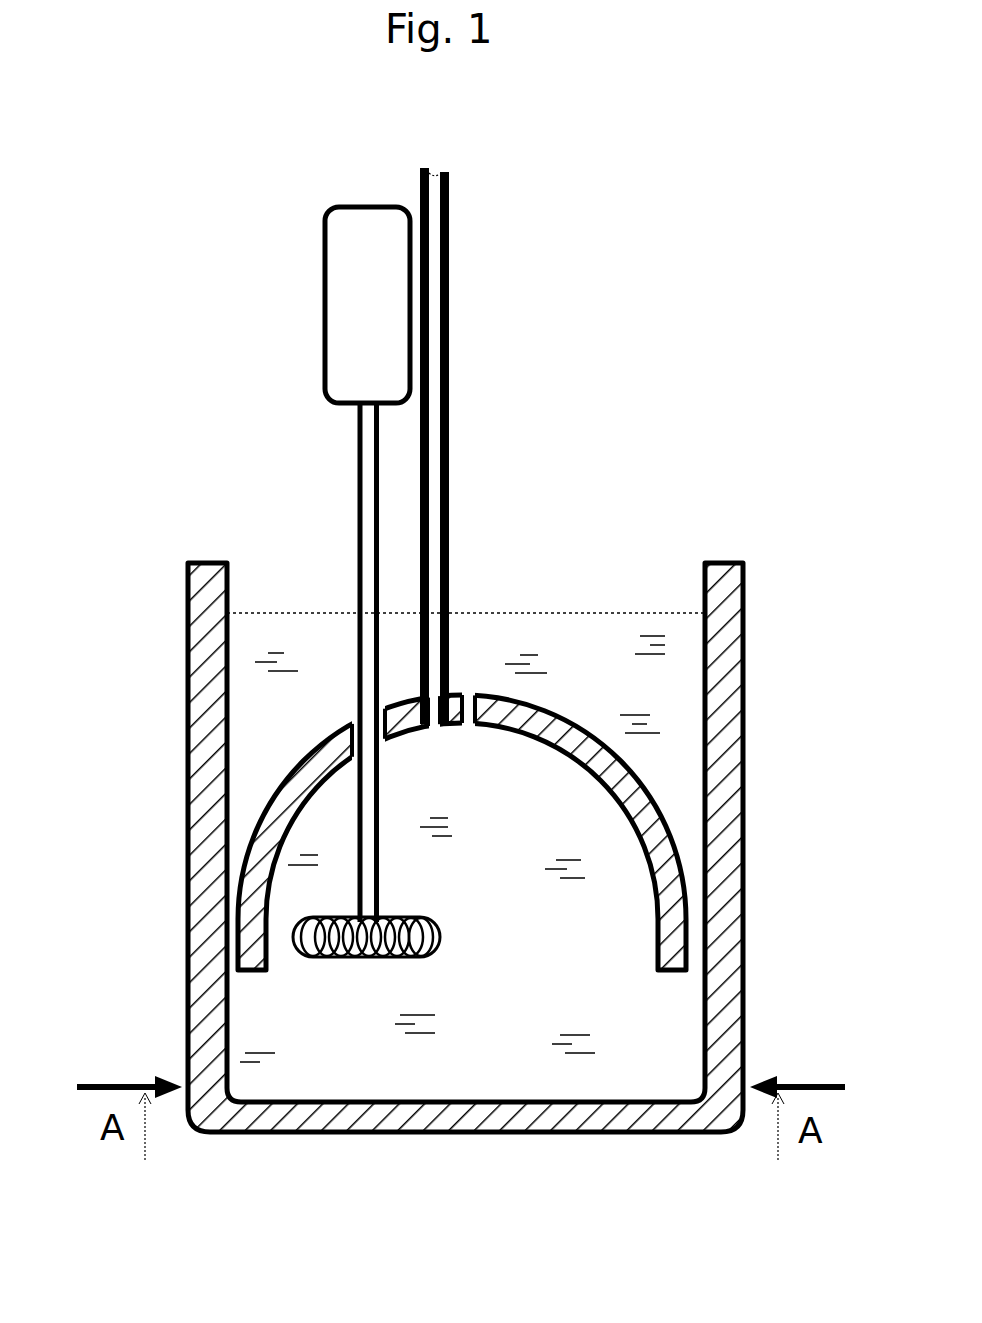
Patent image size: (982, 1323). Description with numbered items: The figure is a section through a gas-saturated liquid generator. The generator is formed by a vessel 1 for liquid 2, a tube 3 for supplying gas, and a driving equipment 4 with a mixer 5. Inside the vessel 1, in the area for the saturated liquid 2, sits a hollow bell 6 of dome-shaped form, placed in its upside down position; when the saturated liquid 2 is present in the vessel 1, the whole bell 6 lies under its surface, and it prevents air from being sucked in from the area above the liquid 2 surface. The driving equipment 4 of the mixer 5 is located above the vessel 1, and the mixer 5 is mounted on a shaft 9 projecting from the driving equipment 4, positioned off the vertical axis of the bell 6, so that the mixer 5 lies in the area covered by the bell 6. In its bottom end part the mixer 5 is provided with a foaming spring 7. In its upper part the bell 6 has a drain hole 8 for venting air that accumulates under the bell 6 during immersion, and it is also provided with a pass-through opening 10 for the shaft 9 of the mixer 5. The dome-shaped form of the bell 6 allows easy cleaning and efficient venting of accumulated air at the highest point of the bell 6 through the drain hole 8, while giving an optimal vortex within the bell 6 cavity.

The vessel 1 is at (745, 618).
The liquid 2 is at (668, 1052).
The tube 3 is at (435, 237).
The driving equipment 4 is at (355, 352).
The mixer 5 is at (346, 958).
The bell 6 is at (657, 836).
The foaming spring 7 is at (292, 952).
The drain hole 8 is at (468, 700).
The shaft 9 is at (357, 520).
The pass-through opening 10 is at (352, 725).